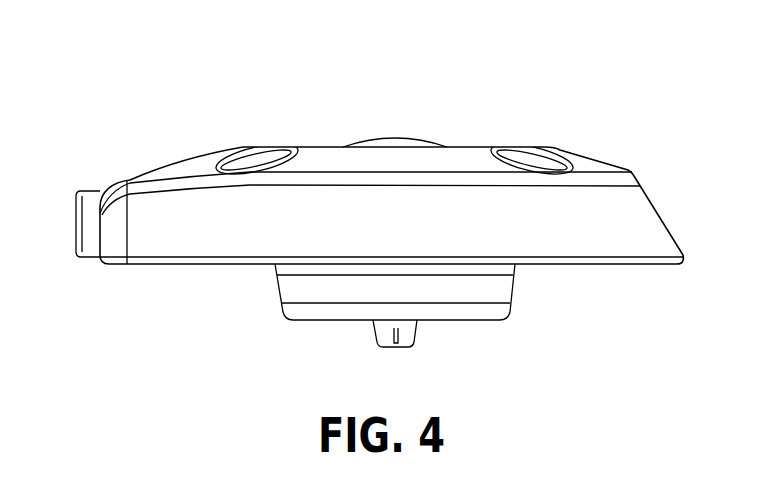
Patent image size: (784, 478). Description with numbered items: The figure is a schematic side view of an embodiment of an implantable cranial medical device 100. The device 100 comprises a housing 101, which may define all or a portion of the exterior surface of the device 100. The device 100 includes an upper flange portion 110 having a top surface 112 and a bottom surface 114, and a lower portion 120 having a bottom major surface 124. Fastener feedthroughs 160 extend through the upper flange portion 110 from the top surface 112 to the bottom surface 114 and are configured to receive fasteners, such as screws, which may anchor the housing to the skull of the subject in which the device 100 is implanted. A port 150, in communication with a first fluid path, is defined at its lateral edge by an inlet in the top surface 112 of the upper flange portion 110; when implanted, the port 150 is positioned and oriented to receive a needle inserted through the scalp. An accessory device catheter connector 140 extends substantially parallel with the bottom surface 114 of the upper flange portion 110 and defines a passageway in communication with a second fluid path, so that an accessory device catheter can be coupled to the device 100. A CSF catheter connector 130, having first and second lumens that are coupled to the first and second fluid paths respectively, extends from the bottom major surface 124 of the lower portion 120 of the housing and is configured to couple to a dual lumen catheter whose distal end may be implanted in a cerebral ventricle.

The implantable medical device 100 is at (226, 97).
The housing 101 is at (182, 247).
The upper flange portion 110 is at (619, 162).
The top surface 112 is at (590, 139).
The bottom surface 114 is at (652, 271).
The lower portion 120 is at (521, 289).
The bottom major surface 124 is at (441, 331).
The CSF catheter connector 130 is at (380, 328).
The accessory device catheter connector 140 is at (88, 229).
The port 150 is at (392, 130).
The fastener feedthroughs 160 is at (263, 163).